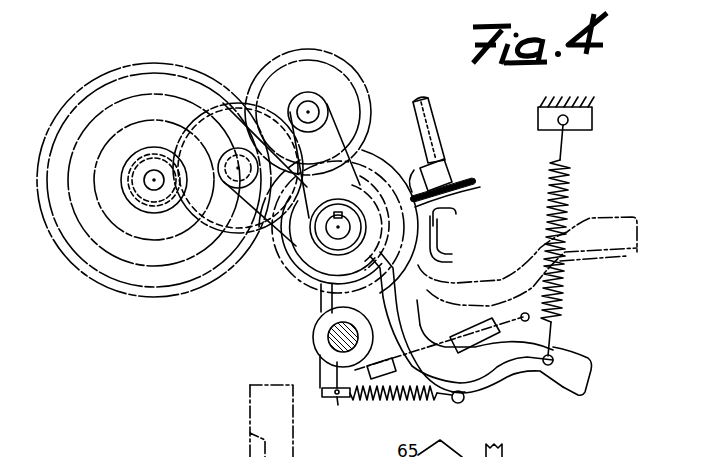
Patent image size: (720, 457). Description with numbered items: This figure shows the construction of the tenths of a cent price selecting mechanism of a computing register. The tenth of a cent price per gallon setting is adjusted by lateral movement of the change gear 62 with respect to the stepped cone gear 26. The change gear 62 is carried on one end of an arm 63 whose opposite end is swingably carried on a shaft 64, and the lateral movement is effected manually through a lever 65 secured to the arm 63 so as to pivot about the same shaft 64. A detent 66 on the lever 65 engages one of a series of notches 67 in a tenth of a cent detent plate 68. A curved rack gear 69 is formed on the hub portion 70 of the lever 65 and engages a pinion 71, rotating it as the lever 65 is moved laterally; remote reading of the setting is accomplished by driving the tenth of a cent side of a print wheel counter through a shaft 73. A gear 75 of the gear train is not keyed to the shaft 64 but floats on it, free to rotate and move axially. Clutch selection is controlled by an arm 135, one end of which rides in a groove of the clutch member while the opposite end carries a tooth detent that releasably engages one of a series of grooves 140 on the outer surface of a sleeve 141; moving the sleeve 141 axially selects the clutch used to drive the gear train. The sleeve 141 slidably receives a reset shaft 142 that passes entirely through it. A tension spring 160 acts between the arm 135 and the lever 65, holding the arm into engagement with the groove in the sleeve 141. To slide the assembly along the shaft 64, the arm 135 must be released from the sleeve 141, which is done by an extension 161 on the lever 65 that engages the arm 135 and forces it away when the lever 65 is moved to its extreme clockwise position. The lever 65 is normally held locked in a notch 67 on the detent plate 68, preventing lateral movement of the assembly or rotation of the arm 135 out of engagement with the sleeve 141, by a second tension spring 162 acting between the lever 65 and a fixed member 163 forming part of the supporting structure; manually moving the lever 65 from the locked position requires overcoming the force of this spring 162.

The stepped cone gear 26 is at (103, 277).
The change gear 62 is at (340, 72).
The arm 63 is at (342, 136).
The shaft 64 is at (328, 236).
The lever 65 is at (565, 395).
The detent 66 is at (440, 272).
The notches 67 is at (448, 237).
The tenth of a cent detent plate 68 is at (458, 212).
The curved rack gear 69 is at (414, 172).
The hub portion 70 is at (470, 198).
The pinion 71 is at (452, 184).
The shaft 73 is at (436, 132).
The gear 75 is at (280, 243).
The arm 135 is at (316, 318).
The grooves 140 is at (344, 406).
The sleeve 141 is at (328, 330).
The reset shaft 142 is at (320, 350).
The tension spring 160 is at (393, 401).
The extension 161 is at (340, 297).
The second tension spring 162 is at (563, 215).
The fixed member 163 is at (538, 114).